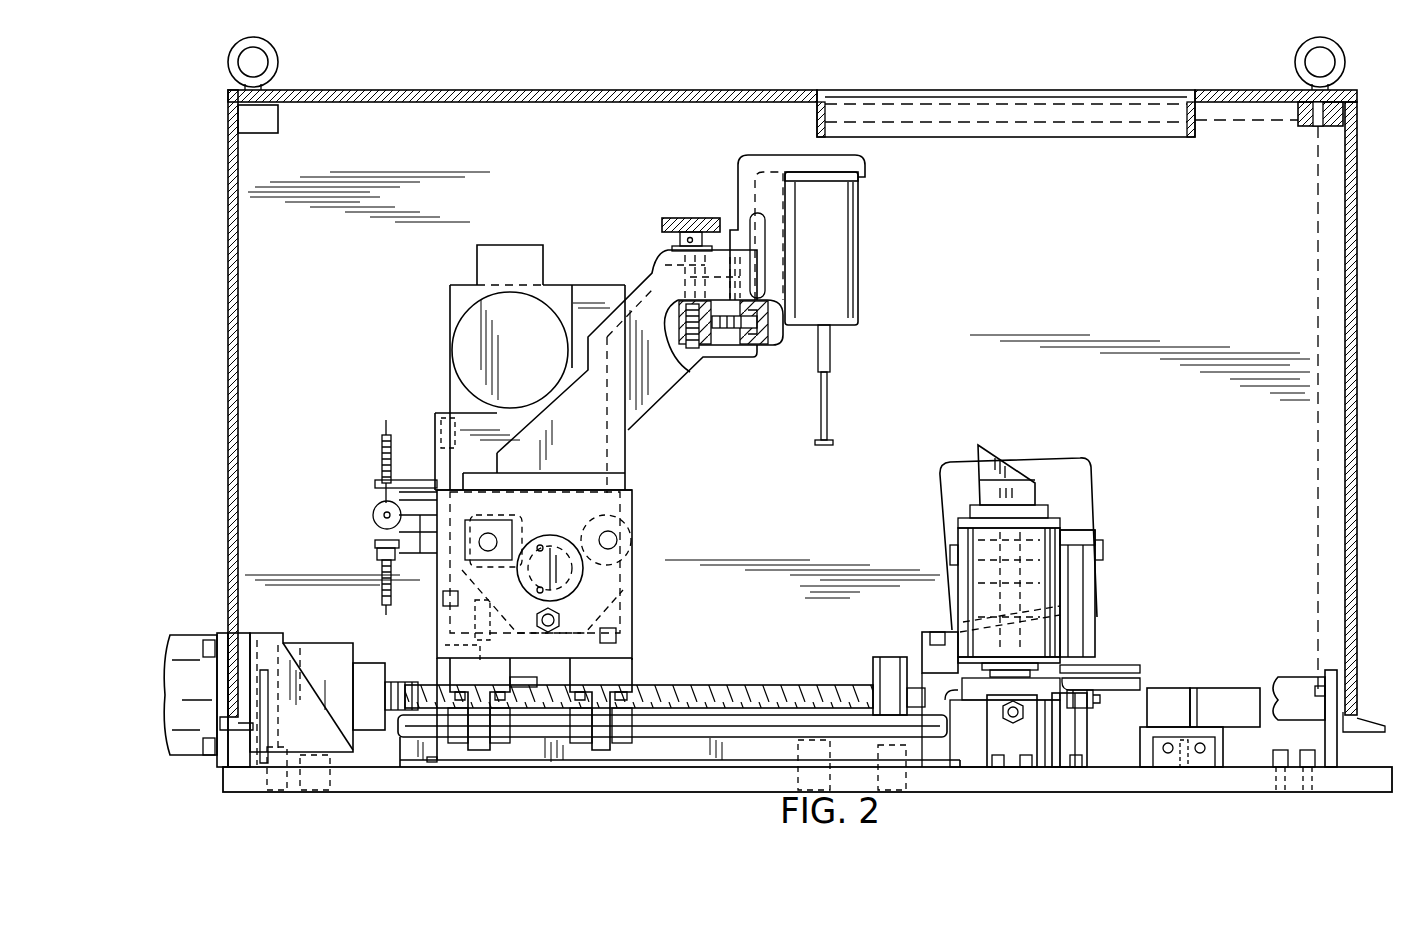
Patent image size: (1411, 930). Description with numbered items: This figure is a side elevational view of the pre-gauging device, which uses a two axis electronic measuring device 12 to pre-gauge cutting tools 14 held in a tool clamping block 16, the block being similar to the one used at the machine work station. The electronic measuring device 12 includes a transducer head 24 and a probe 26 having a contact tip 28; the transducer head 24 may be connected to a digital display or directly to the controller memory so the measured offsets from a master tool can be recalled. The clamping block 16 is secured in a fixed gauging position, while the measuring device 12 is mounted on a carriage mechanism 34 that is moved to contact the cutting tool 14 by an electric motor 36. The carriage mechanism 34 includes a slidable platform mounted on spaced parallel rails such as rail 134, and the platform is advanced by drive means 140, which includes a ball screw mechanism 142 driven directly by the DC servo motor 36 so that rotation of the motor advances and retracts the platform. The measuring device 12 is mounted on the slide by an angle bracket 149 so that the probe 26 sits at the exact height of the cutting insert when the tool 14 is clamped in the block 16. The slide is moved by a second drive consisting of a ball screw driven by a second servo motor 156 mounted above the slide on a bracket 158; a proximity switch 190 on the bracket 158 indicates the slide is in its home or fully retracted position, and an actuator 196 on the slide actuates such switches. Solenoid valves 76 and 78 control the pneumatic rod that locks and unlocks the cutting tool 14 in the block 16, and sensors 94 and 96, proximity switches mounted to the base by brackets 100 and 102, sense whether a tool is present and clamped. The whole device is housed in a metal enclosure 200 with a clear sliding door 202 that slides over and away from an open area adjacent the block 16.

The two axis electronic measuring device 12 is at (860, 253).
The cutting tool 14 is at (1003, 463).
The tool clamping block 16 is at (1062, 522).
The transducer head 24 is at (857, 198).
The probe 26 is at (833, 396).
The contact tip 28 is at (833, 443).
The carriage mechanism 34 is at (633, 617).
The electric motor 36 is at (303, 638).
The solenoid valve 76 is at (1162, 688).
The solenoid valve 78 is at (1217, 692).
The sensor 94 is at (1087, 708).
The sensor 96 is at (1015, 742).
The bracket 100 is at (1073, 737).
The bracket 102 is at (1017, 715).
The rail 134 is at (668, 725).
The drive means 140 is at (318, 640).
The ball screw mechanism 142 is at (720, 690).
The angle bracket 149 is at (662, 380).
The second servo motor 156 is at (473, 337).
The bracket 158 is at (436, 418).
The proximity switch 190 is at (380, 453).
The actuator 196 is at (373, 515).
The metal enclosure 200 is at (1332, 213).
The clear sliding door 202 is at (1012, 128).